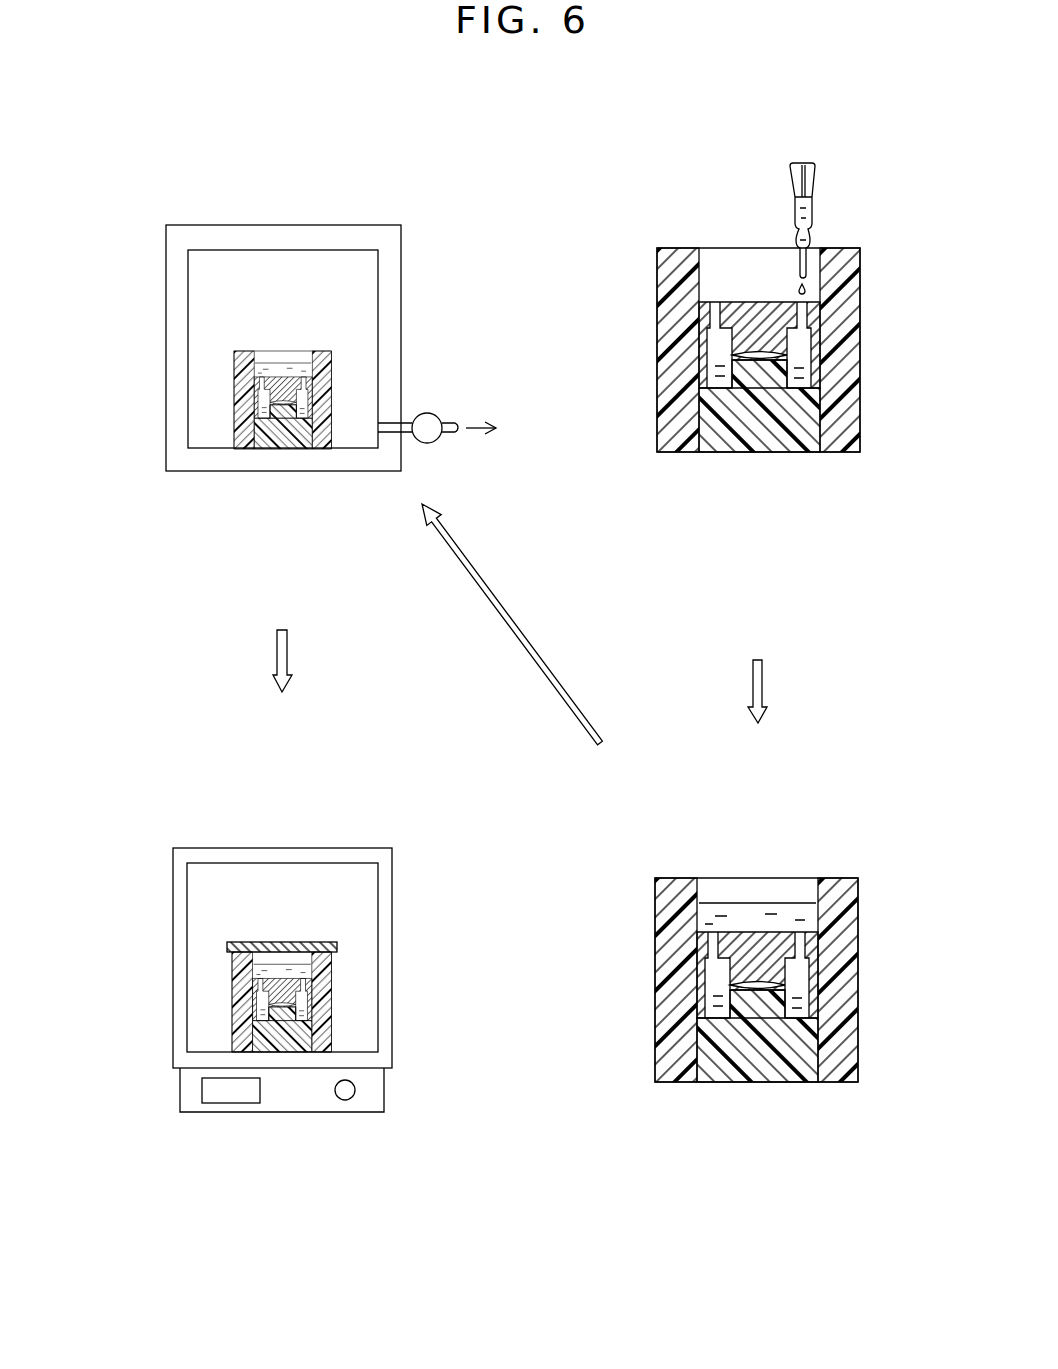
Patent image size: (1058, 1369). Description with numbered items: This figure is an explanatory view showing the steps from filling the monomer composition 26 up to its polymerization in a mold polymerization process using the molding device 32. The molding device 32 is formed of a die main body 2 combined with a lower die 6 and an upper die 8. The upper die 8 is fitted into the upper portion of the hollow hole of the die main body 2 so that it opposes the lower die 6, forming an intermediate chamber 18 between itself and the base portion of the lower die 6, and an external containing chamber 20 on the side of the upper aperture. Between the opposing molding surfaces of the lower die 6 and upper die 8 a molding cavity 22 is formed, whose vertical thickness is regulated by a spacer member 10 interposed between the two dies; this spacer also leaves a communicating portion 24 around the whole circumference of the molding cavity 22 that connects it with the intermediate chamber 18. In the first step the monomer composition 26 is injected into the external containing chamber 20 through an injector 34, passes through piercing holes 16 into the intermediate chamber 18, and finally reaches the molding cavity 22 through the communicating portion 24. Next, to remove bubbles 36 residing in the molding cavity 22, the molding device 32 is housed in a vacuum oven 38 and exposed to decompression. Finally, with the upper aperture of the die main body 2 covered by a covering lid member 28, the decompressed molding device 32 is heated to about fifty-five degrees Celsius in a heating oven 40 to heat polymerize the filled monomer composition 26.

The die main body 2 is at (677, 442).
The lower die 6 is at (718, 432).
The upper die 8 is at (721, 303).
The spacer member 10 is at (702, 372).
The piercing holes 16 is at (710, 338).
The intermediate chamber 18 is at (718, 352).
The external containing chamber 20 is at (708, 270).
The molding cavity 22 is at (765, 345).
The communicating portion 24 is at (806, 352).
The monomer composition 26 is at (800, 160).
The covering lid member 28 is at (248, 944).
The molding device 32 is at (663, 236).
The injector 34 is at (830, 180).
The bubbles 36 is at (758, 985).
The vacuum oven 38 is at (272, 212).
The heating oven 40 is at (258, 835).